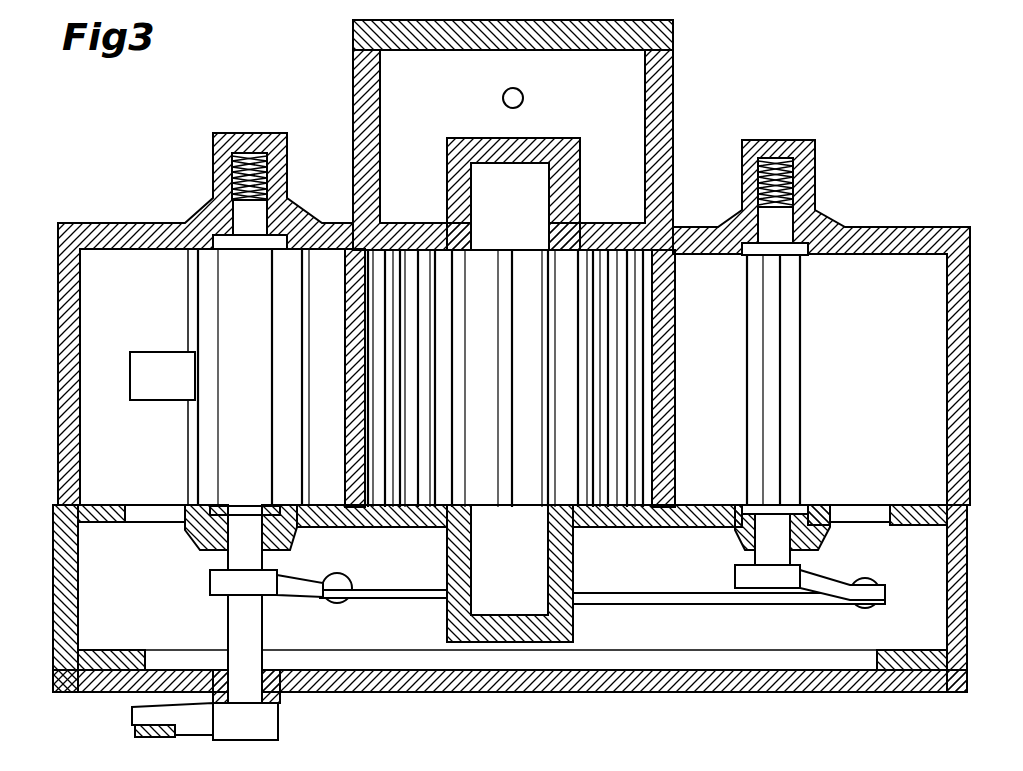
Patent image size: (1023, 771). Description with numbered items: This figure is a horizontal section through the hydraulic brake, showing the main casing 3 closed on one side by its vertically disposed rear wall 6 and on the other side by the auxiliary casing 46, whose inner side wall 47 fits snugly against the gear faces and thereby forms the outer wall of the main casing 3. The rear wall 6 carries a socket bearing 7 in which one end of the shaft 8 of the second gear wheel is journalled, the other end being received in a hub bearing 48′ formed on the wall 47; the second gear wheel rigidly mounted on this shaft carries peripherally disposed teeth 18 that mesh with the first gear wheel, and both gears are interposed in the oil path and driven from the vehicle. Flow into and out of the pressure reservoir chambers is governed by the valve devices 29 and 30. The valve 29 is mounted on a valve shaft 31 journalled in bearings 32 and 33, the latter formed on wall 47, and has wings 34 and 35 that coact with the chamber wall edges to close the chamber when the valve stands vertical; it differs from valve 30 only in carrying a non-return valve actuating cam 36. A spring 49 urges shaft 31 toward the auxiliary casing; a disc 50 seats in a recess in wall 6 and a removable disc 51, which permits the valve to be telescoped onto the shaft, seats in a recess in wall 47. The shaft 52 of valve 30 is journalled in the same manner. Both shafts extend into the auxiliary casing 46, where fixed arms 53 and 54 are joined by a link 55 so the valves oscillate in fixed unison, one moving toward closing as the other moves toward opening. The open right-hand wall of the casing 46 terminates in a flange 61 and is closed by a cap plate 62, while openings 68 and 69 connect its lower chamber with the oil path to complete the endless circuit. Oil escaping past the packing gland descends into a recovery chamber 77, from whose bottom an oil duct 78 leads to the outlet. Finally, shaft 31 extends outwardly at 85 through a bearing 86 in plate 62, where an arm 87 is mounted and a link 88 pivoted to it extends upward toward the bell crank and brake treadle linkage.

The main casing 3 is at (58, 377).
The rear wall 6 is at (121, 223).
The socket journal or bearing 7 is at (560, 138).
The shaft of second gear wheel 8 is at (515, 197).
The gear teeth 18 is at (585, 355).
The valve device 29 is at (245, 432).
The valve device 30 is at (797, 411).
The valve shaft 31 is at (285, 206).
The bearing 32 is at (215, 167).
The bearing 33 is at (205, 543).
The wing 34 is at (189, 468).
The wing 35 is at (302, 471).
The non-return valve actuating cam 36 is at (146, 370).
The auxiliary casing 46 is at (58, 588).
The inner side wall 47 is at (692, 505).
The hub bearing 48′ is at (573, 581).
The spring 49 is at (252, 153).
The disc 50 is at (238, 247).
The removable disc 51 is at (237, 510).
The shaft of valve 30 52 is at (810, 213).
The arm 53 is at (300, 582).
The arm 54 is at (830, 582).
The link 55 is at (409, 599).
The flange 61 is at (105, 652).
The cap plate 62 is at (585, 692).
The opening 68 is at (138, 513).
The opening 69 is at (862, 512).
The recovery chamber 77 is at (353, 82).
The oil duct 78 is at (503, 98).
The shaft extension 85 is at (233, 638).
The bearing 86 is at (278, 701).
The arm 87 is at (178, 706).
The link 88 is at (135, 733).